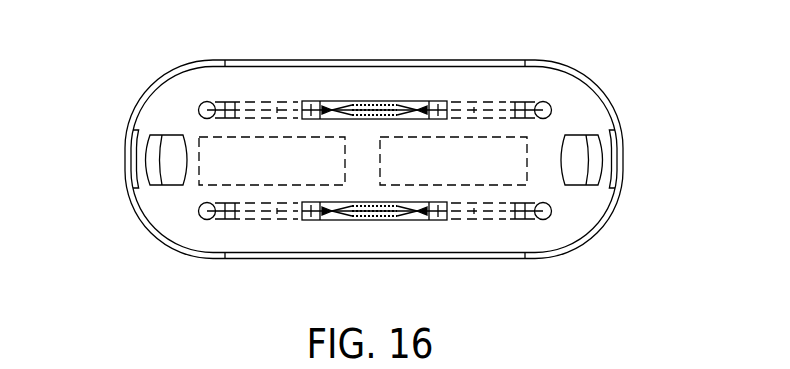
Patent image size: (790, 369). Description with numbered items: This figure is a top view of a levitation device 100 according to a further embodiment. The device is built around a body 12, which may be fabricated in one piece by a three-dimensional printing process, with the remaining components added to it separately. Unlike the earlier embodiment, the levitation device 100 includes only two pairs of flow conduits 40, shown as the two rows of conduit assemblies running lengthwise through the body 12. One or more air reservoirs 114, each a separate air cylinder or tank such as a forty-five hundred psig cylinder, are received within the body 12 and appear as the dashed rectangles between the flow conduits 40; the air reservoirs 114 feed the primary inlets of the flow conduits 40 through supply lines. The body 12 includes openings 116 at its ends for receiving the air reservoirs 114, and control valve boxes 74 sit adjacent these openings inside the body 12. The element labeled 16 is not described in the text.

The levitation device 100 is at (148, 80).
The body 12 is at (596, 90).
The openings 116 is at (127, 161).
The control valve boxes 74 is at (173, 177).
The frame member 16 is at (197, 215).
The flow conduits 40 is at (282, 98).
The air reservoir 114 is at (442, 136).